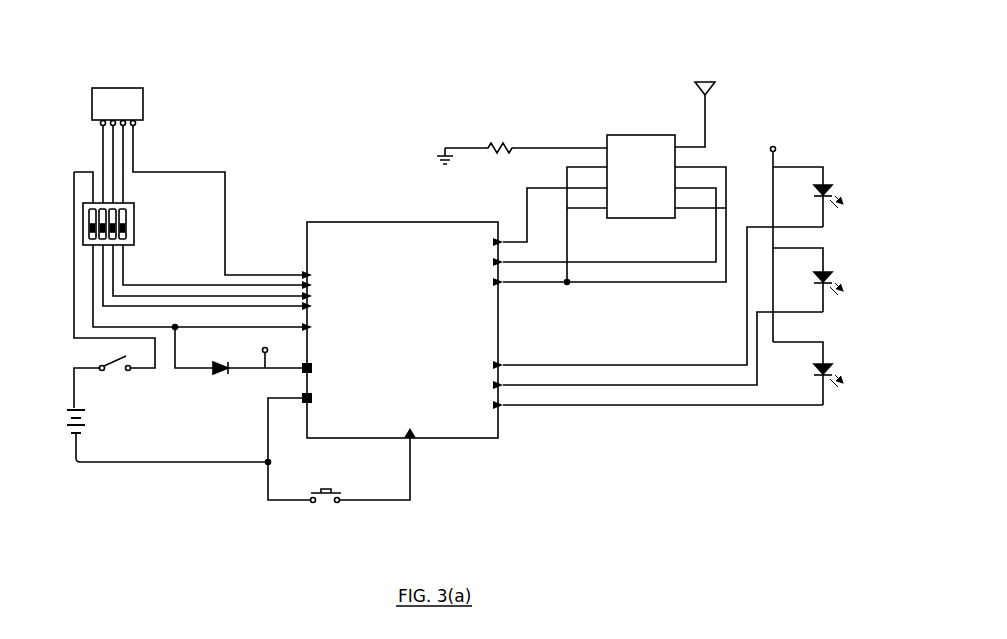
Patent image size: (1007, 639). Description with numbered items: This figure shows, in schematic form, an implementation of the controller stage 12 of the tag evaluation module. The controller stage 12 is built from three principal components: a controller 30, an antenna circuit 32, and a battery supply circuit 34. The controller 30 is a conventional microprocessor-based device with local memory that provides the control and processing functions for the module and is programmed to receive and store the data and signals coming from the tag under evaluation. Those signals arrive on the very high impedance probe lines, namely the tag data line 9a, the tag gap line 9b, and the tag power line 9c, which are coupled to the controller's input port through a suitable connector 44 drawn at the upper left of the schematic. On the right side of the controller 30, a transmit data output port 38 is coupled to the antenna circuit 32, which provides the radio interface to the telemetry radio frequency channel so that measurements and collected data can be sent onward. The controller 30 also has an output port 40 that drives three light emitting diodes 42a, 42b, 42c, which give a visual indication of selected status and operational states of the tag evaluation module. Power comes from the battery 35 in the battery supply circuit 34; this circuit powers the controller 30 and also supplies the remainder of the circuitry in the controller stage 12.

The controller stage 12 is at (538, 33).
The connector 44 is at (145, 101).
The tag data line 9a is at (125, 164).
The tag gap line 9b is at (103, 158).
The tag power line 9c is at (112, 133).
The battery supply circuit 34 is at (238, 351).
The battery 35 is at (88, 408).
The controller 30 is at (372, 222).
The transmit data output port 38 is at (510, 295).
The antenna circuit 32 is at (652, 96).
The output port 40 is at (512, 423).
The light emitting diode 42a is at (838, 192).
The light emitting diode 42b is at (833, 272).
The light emitting diode 42c is at (832, 355).